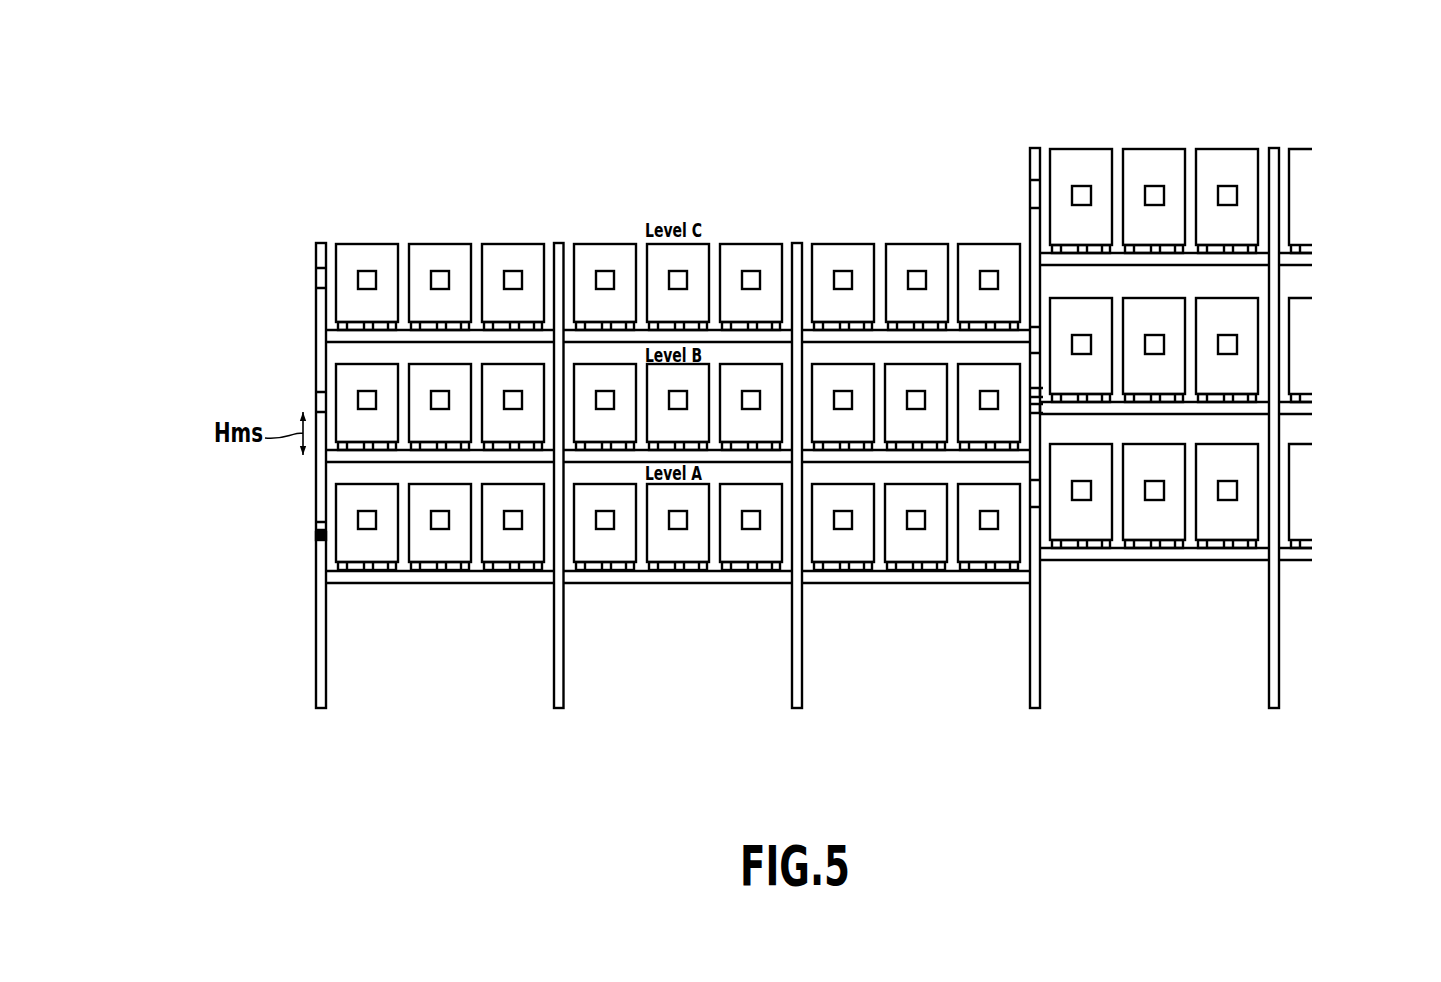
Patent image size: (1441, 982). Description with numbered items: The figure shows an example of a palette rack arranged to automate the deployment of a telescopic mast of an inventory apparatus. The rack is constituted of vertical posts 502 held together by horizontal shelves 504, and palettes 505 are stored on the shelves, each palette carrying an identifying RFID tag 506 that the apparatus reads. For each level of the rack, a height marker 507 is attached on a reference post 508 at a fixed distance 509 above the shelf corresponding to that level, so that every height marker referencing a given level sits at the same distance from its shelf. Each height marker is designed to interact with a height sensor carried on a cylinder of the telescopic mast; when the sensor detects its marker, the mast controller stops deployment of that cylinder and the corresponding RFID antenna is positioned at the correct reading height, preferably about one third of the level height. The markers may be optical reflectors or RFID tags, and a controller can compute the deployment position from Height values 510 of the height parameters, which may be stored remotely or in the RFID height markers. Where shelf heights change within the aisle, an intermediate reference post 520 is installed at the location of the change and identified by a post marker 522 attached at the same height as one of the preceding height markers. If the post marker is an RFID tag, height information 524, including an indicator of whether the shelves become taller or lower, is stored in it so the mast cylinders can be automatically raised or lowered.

The vertical post 502 is at (558, 242).
The horizontal shelf 504 is at (887, 588).
The palette 505 is at (917, 242).
The identifying RFID tag 506 is at (844, 270).
The height marker 507 is at (316, 522).
The reference post 508 is at (322, 242).
The fixed distance Hms 509 is at (240, 402).
The Height values 510 is at (316, 538).
The intermediate reference post 520 is at (1036, 148).
The post marker 522 is at (1043, 408).
The height information 524 is at (1043, 392).